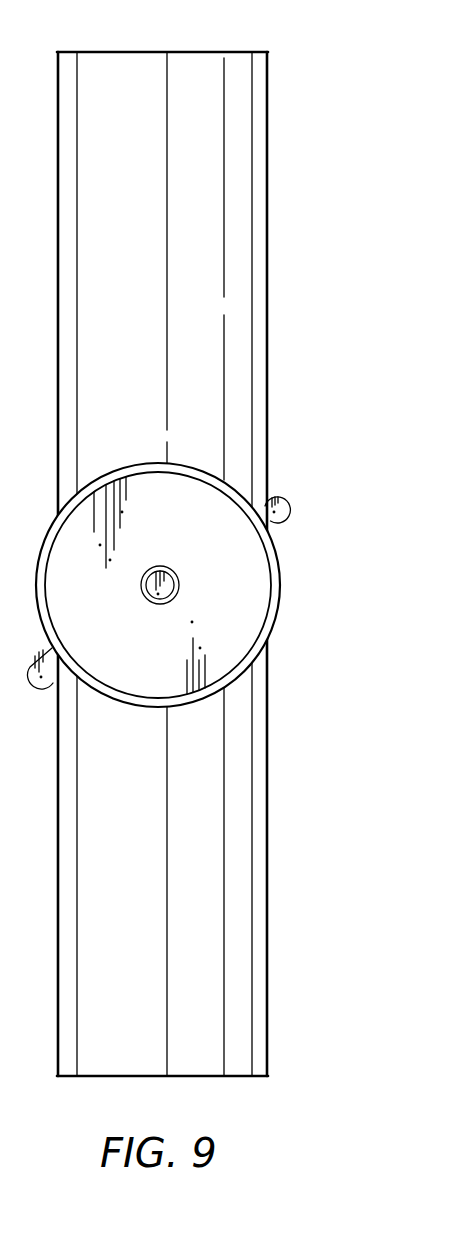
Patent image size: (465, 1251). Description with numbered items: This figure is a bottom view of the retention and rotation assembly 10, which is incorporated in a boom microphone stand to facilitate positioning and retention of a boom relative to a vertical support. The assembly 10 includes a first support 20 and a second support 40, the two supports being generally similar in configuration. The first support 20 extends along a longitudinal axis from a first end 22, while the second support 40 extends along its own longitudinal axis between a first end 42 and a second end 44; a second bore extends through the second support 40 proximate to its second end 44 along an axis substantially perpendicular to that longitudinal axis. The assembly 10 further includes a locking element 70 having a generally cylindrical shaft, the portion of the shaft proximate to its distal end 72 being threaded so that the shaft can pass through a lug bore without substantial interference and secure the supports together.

The retention and rotation assembly 10 is at (274, 406).
The first support 20 is at (241, 918).
The first end 22 is at (202, 1077).
The second support 40 is at (229, 335).
The first end 42 is at (172, 52).
The second end 44 is at (190, 703).
The locking element 70 is at (282, 519).
The distal end 72 is at (166, 575).